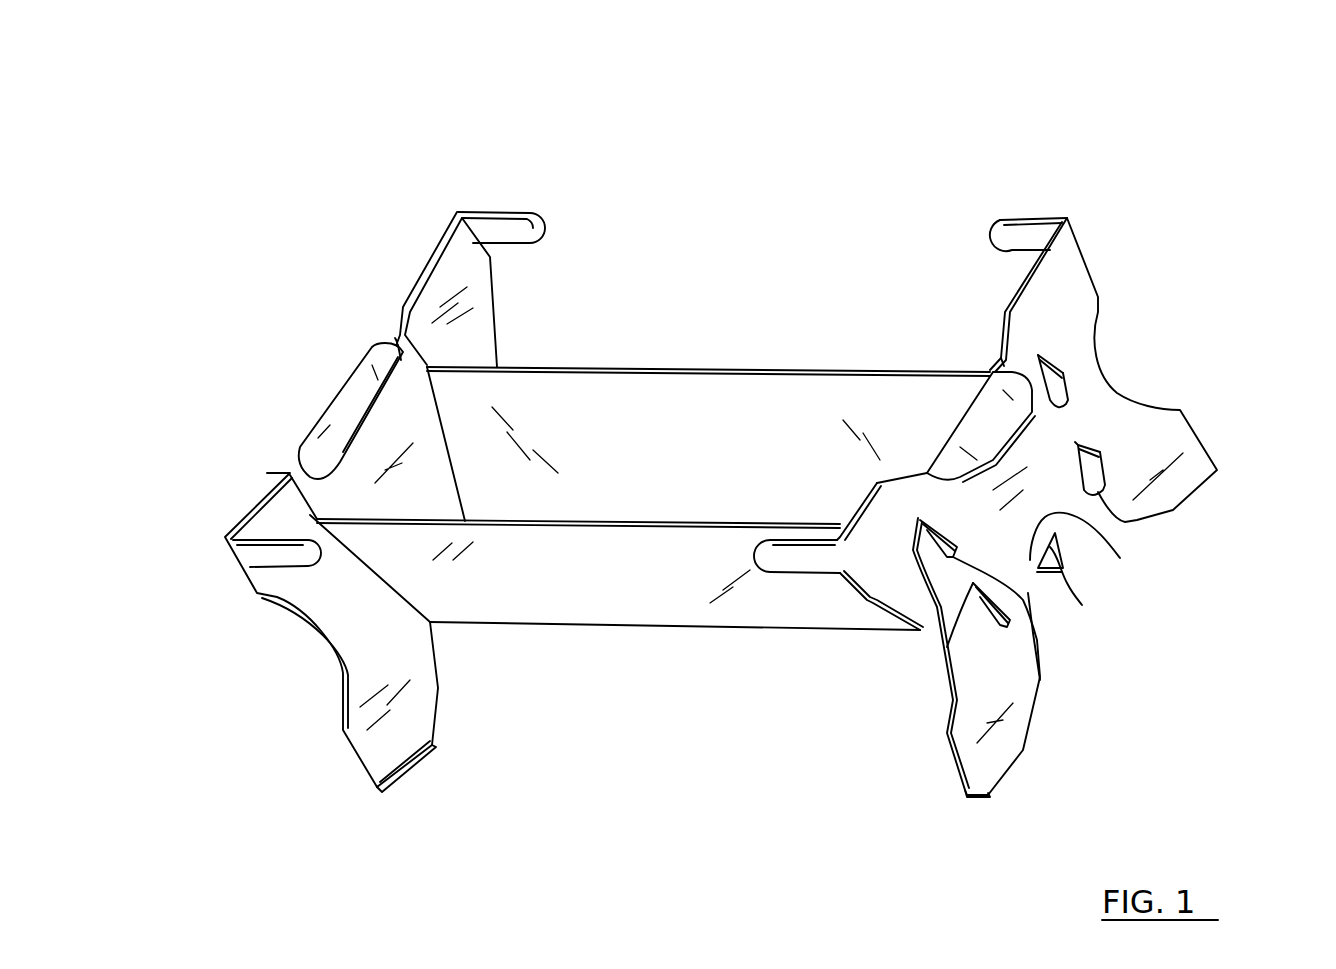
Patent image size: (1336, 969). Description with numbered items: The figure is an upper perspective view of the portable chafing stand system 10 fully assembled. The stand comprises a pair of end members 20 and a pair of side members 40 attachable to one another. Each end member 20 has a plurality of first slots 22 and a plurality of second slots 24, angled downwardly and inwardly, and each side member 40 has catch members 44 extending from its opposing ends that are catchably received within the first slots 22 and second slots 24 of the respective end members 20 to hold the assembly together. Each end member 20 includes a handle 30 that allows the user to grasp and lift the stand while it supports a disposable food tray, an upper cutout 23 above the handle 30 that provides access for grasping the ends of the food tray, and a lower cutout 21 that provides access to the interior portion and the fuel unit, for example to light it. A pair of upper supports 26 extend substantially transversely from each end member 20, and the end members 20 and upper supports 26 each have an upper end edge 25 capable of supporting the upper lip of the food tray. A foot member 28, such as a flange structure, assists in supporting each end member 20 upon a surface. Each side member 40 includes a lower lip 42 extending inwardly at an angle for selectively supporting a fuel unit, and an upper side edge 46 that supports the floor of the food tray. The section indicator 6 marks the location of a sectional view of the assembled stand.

The portable chafing stand system 10 is at (1190, 133).
The end member 20 is at (1102, 297).
The lower cutout 21 is at (1120, 558).
The first slot 22 is at (397, 340).
The upper cutout 23 is at (400, 340).
The second slot 24 is at (310, 513).
The upper end edge 25 is at (438, 248).
The upper support 26 is at (527, 231).
The foot member 28 is at (407, 767).
The handle 30 is at (335, 412).
The side member 40 is at (622, 370).
The lower lip 42 is at (1082, 605).
The catch member 44 is at (1070, 395).
The upper side edge 46 is at (900, 370).
The section line 6 is at (728, 340).